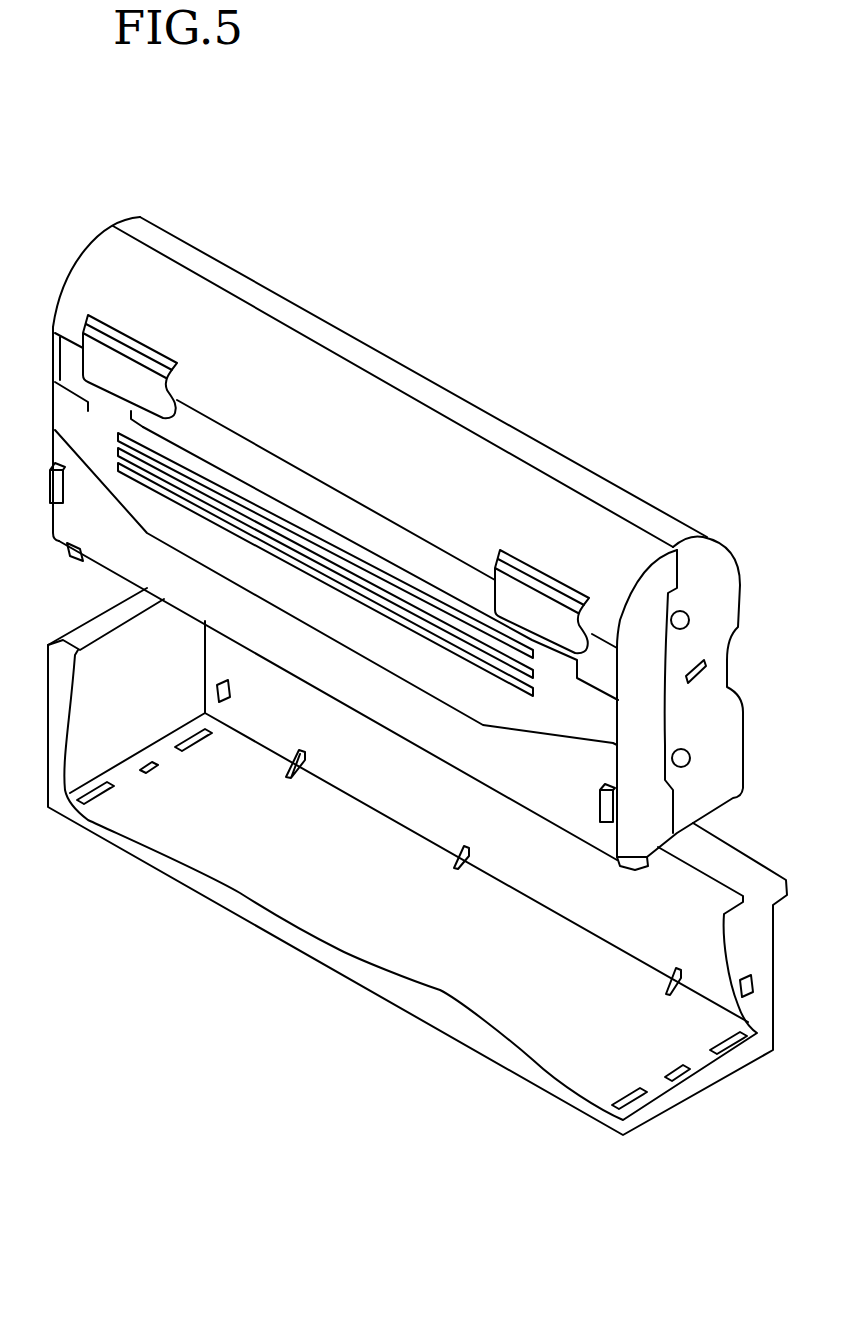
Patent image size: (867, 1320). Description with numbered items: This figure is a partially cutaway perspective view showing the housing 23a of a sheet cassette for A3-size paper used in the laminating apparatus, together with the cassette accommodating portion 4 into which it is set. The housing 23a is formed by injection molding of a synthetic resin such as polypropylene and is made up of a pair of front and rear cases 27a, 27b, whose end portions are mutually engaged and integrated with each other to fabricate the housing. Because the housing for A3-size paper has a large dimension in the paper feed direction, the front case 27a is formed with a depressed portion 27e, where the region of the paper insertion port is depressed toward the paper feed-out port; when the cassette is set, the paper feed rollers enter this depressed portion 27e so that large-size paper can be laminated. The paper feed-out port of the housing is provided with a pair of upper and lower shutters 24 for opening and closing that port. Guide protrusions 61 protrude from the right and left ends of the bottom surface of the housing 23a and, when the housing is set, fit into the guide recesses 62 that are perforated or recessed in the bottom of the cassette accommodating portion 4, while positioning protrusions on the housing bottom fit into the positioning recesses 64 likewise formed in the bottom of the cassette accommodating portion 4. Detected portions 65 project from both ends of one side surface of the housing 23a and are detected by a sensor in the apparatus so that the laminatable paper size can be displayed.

The cassette accommodating portion 4 is at (445, 1054).
The housing for A3-size paper 23a is at (401, 362).
The shutters 24 is at (277, 527).
The front case 27a is at (566, 456).
The rear case 27b is at (435, 470).
The depressed portion 27e is at (745, 663).
The guide protrusions 61 is at (77, 562).
The guide recesses 62 is at (207, 742).
The positioning recesses 64 is at (160, 768).
The detected portions 65 is at (64, 490).